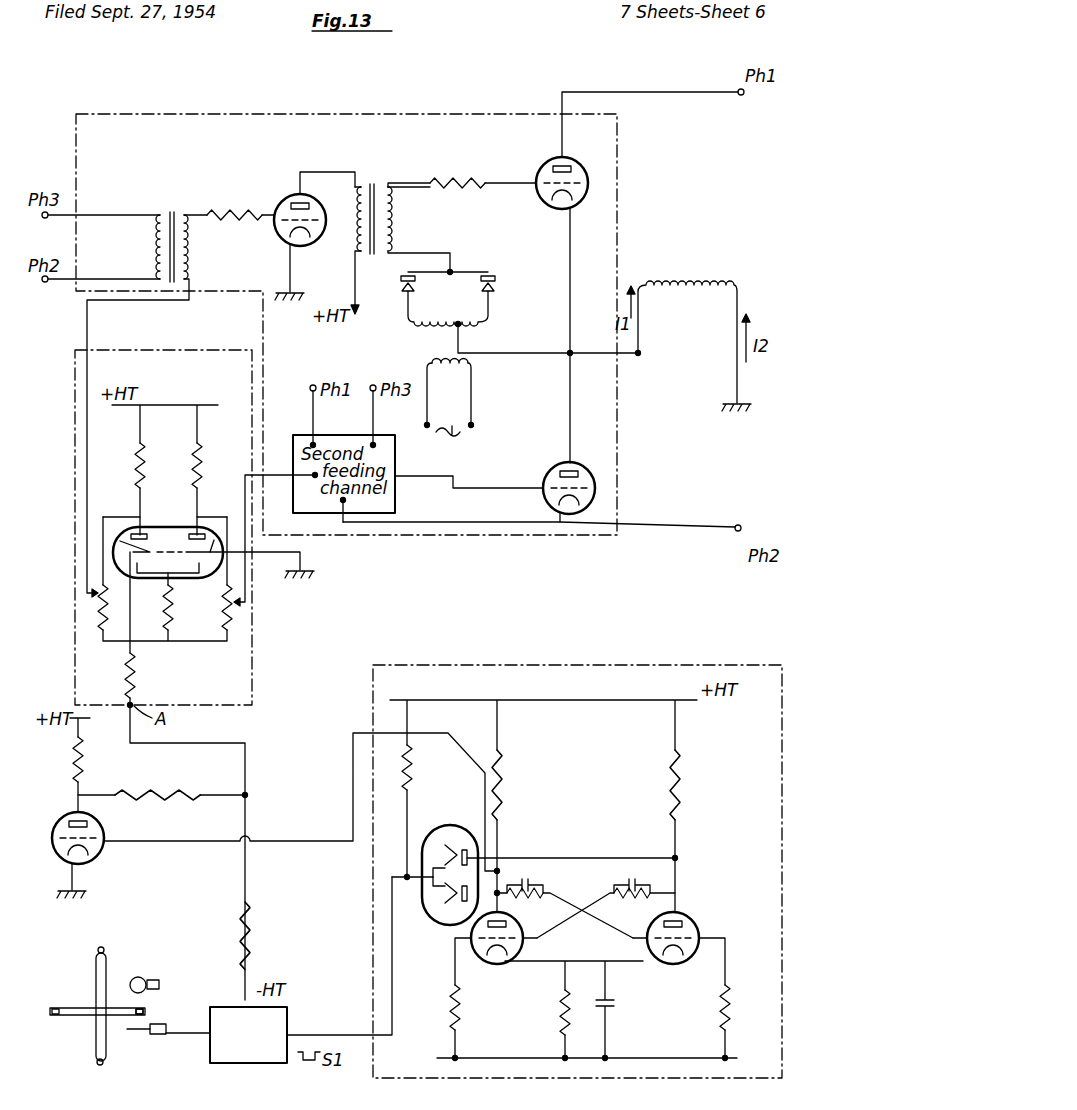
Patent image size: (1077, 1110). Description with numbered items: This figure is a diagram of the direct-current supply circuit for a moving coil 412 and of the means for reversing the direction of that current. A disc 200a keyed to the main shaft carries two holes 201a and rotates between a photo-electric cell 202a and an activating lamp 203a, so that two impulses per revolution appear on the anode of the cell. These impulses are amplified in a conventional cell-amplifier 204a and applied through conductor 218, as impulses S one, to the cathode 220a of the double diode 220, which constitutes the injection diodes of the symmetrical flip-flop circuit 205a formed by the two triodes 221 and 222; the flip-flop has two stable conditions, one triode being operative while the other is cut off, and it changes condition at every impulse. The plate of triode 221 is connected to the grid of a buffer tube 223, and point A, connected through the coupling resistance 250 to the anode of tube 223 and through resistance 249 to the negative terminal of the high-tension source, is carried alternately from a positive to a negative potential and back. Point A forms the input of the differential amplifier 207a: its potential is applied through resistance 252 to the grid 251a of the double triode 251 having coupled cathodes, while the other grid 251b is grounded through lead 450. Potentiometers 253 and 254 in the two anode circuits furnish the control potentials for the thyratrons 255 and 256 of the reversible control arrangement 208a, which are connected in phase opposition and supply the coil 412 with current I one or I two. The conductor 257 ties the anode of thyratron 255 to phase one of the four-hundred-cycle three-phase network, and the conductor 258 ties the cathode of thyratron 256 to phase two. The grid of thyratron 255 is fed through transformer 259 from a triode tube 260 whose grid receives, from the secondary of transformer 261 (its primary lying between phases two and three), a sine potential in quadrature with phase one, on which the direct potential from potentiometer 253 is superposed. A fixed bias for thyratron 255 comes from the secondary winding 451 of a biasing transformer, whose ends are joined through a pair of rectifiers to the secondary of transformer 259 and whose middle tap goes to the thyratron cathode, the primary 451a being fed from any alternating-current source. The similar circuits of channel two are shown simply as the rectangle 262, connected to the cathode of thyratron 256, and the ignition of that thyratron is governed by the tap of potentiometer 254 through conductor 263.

The reversible control arrangement 208a is at (386, 114).
The transformer 261 is at (176, 212).
The triode tube 260 is at (280, 196).
The transformer 259 is at (384, 184).
The secondary winding of biasing transformer 451 is at (432, 328).
The primary of biasing transformer 451a is at (471, 363).
The moving coil 412 is at (692, 284).
The thyratron 255 is at (588, 172).
The conductor 257 is at (680, 92).
The thyratron 256 is at (596, 488).
The conductor 258 is at (676, 529).
The conductor 263 is at (276, 474).
The channel II circuits (rectangle) 262 is at (395, 510).
The differential amplifier 207a is at (72, 514).
The double triode 251 is at (171, 533).
The grid 251a is at (104, 522).
The grid 251b is at (216, 522).
The lead 450 is at (280, 540).
The potentiometer 253 is at (96, 612).
The potentiometer 254 is at (226, 628).
The resistance 252 is at (136, 672).
The coupling resistance 250 is at (173, 794).
The buffer tube 223 is at (56, 854).
The resistance 249 is at (250, 922).
The electronic flip-flop circuit 205a is at (631, 665).
The double diode 220 is at (404, 884).
The cathode 220a is at (447, 905).
The conductor 218 is at (327, 1024).
The triode 221 is at (482, 954).
The triode 222 is at (696, 929).
The disc 200a is at (66, 1007).
The activating lamp 203a is at (142, 978).
The holes 201a is at (146, 1011).
The photo-electric cell 202a is at (150, 1047).
The cell-amplifier 204a is at (248, 1035).